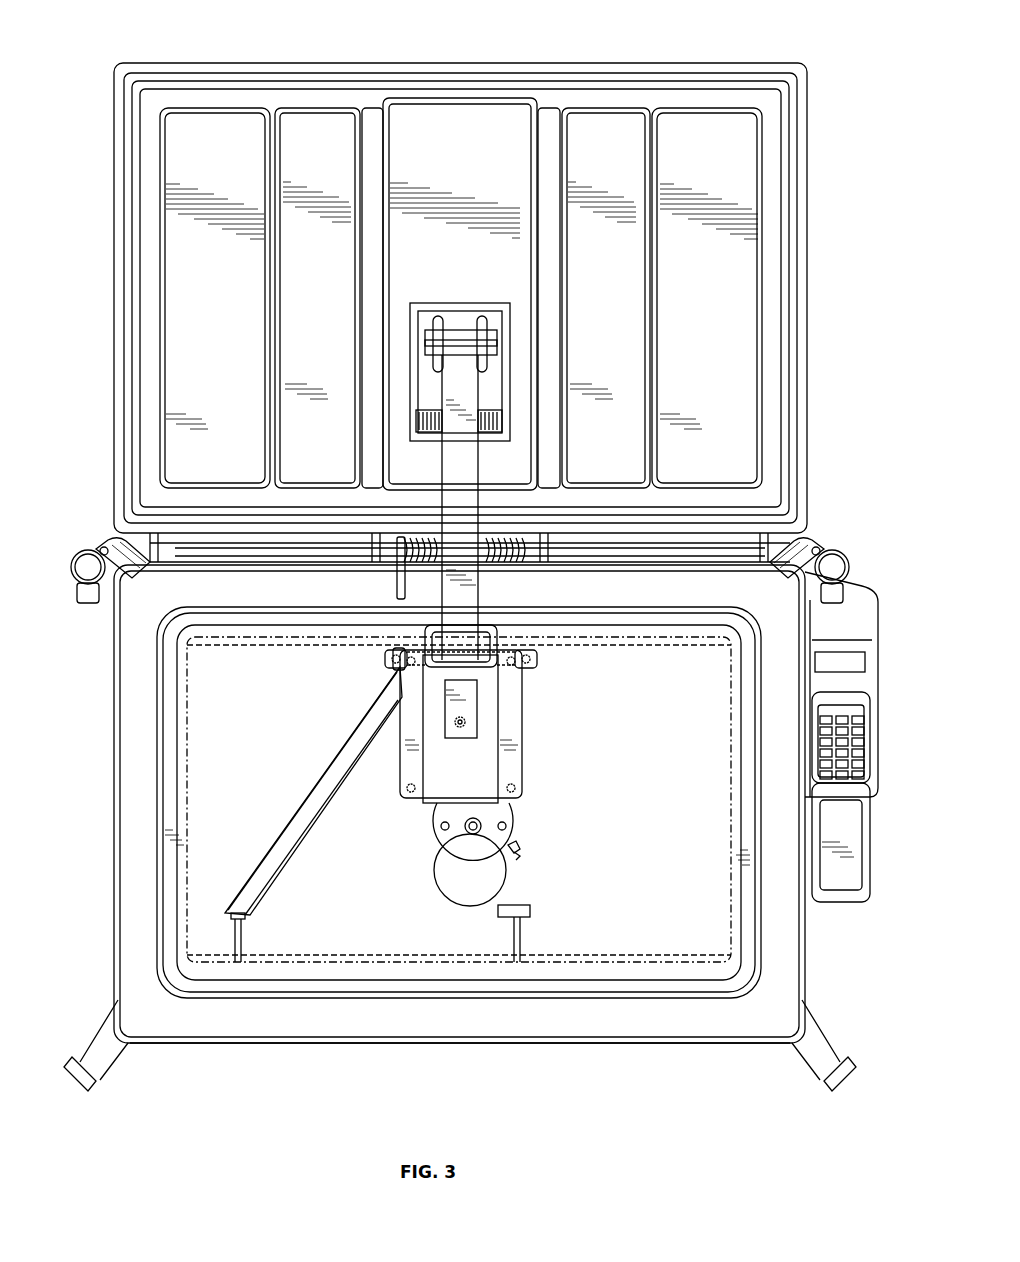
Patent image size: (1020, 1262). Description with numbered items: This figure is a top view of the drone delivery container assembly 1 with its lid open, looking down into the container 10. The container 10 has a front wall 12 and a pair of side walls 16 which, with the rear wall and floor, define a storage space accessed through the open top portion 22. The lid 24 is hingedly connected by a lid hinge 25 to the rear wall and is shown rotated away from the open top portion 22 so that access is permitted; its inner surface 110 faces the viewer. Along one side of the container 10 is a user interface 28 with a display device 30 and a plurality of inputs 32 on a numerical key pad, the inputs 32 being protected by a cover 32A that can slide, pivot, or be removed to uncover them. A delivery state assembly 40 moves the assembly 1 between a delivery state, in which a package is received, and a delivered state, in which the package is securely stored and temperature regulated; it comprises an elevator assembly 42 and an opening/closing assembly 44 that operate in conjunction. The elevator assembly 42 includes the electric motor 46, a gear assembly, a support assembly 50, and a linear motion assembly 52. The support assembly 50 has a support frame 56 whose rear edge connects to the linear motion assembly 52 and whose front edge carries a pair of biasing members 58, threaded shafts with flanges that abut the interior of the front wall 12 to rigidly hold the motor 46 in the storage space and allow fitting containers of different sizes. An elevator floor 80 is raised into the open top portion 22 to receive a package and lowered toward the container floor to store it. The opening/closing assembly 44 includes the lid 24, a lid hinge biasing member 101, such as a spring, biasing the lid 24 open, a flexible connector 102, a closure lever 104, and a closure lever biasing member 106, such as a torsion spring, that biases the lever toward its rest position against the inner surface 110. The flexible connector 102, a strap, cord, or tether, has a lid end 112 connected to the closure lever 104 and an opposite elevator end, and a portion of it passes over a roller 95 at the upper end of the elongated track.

The drone delivery container assembly 1 is at (78, 262).
The container 10 is at (88, 895).
The front wall 12 is at (480, 1043).
The pair of side walls 16 is at (115, 968).
The open top portion 22 is at (165, 705).
The lid 24 is at (118, 443).
The lid hinge 25 is at (150, 562).
The user interface 28 is at (880, 750).
The display device 30 is at (840, 668).
The inputs 32 is at (862, 720).
The cover 32A is at (850, 825).
The delivery state assembly 40 is at (855, 525).
The elevator assembly 42 is at (545, 760).
The opening/closing assembly 44 is at (720, 462).
The electric motor 46 is at (497, 876).
The support assembly 50 is at (317, 745).
The linear motion assembly 52 is at (540, 682).
The support frame 56 is at (275, 840).
The biasing members 58 is at (247, 940).
The elevator floor 80 is at (210, 862).
The roller 95 is at (495, 637).
The lid hinge biasing member 101 is at (425, 565).
The flexible connector 102 is at (455, 463).
The closure lever 104 is at (458, 318).
The closure lever biasing member 106 is at (500, 412).
The inner surface 110 is at (477, 130).
The lid end 112 is at (468, 338).